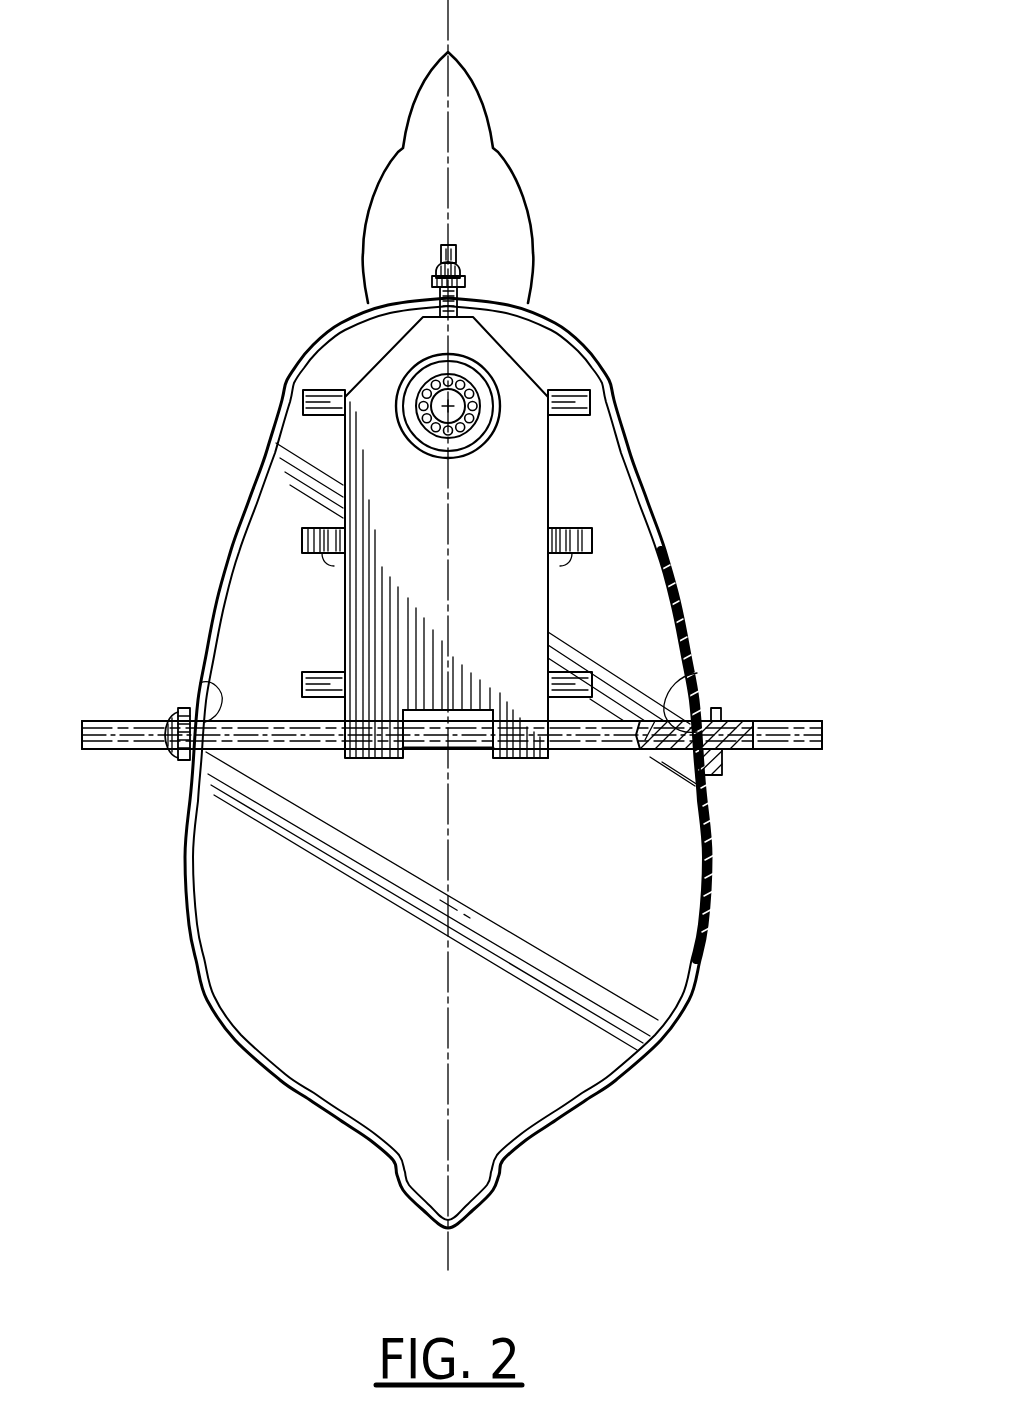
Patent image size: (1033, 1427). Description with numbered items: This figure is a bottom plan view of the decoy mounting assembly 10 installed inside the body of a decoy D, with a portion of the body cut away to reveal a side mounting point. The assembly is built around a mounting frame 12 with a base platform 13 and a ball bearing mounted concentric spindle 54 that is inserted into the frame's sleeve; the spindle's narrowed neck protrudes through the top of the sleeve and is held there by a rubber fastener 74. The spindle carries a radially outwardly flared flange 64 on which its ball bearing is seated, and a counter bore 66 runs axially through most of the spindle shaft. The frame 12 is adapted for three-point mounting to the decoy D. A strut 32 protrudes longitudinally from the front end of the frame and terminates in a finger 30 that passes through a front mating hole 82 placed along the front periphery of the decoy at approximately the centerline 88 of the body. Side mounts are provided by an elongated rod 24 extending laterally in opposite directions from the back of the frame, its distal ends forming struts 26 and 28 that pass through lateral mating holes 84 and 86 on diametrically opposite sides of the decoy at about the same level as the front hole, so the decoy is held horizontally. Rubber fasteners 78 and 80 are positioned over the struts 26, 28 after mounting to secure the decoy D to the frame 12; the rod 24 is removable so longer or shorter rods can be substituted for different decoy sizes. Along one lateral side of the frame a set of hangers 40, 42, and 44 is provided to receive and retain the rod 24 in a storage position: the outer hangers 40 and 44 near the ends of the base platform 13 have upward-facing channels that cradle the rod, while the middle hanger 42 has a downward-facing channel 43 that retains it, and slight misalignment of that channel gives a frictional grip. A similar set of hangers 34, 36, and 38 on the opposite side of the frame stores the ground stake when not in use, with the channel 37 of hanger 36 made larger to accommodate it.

The decoy mounting assembly 10 is at (288, 504).
The mounting frame 12 is at (565, 459).
The base platform 13 is at (553, 498).
The rod 24 is at (424, 758).
The strut 26 is at (452, 716).
The strut 28 is at (718, 708).
The finger 30 is at (458, 254).
The strut 32 is at (430, 288).
The hanger 34 is at (302, 680).
The hanger 36 is at (302, 540).
The channel 37 is at (322, 553).
The hanger 38 is at (303, 392).
The hanger 40 is at (593, 678).
The hanger 42 is at (593, 540).
The channel 43 is at (572, 553).
The hanger 44 is at (578, 392).
The ball bearing mounted concentric spindle 54 is at (410, 358).
The flange 64 is at (405, 392).
The counter bore 66 is at (425, 432).
The rubber fastener 74 is at (421, 268).
The rubber fastener 78 is at (172, 772).
The rubber fastener 80 is at (716, 772).
The front mating hole 82 is at (470, 305).
The lateral mating hole 84 is at (200, 683).
The lateral mating hole 86 is at (697, 673).
The centerline 88 is at (448, 38).
The decoy D is at (608, 359).